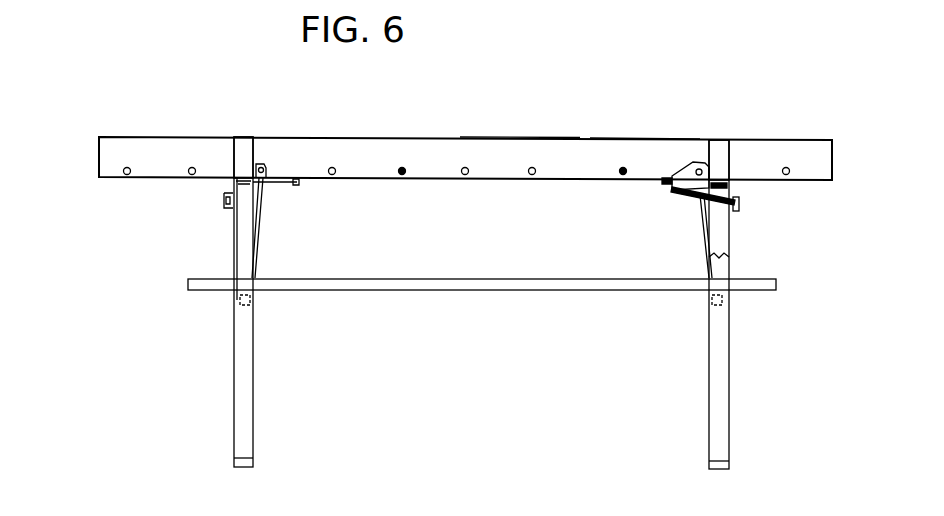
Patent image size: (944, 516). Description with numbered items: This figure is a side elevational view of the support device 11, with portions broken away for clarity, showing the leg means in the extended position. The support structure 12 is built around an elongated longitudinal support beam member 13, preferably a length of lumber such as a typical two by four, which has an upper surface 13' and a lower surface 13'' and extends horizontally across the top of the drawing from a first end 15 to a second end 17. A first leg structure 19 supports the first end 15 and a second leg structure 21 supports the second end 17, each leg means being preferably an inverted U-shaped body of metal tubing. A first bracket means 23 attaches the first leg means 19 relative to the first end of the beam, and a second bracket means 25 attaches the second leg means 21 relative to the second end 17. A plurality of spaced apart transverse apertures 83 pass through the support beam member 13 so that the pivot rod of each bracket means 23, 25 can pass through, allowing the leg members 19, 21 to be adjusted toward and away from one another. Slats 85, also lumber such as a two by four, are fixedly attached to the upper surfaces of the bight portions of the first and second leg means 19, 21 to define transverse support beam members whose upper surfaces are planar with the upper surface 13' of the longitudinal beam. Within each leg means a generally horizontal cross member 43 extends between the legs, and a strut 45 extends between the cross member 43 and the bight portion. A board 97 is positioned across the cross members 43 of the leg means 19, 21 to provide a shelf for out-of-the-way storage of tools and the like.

The support device 11 is at (108, 97).
The support structure 12 is at (393, 139).
The longitudinal support beam member 13 is at (520, 108).
The upper surface 13' is at (645, 109).
The lower surface 13'' is at (451, 203).
The first end 15 is at (99, 158).
The second end 17 is at (832, 158).
The first leg structure 19 is at (242, 425).
The second leg structure 21 is at (715, 429).
The first bracket means 23 is at (277, 187).
The second bracket means 25 is at (672, 184).
The cross member 43 is at (235, 301).
The strut 45 is at (255, 233).
The transverse apertures 83 is at (127, 174).
The slats 85 is at (241, 150).
The board 97 is at (467, 285).